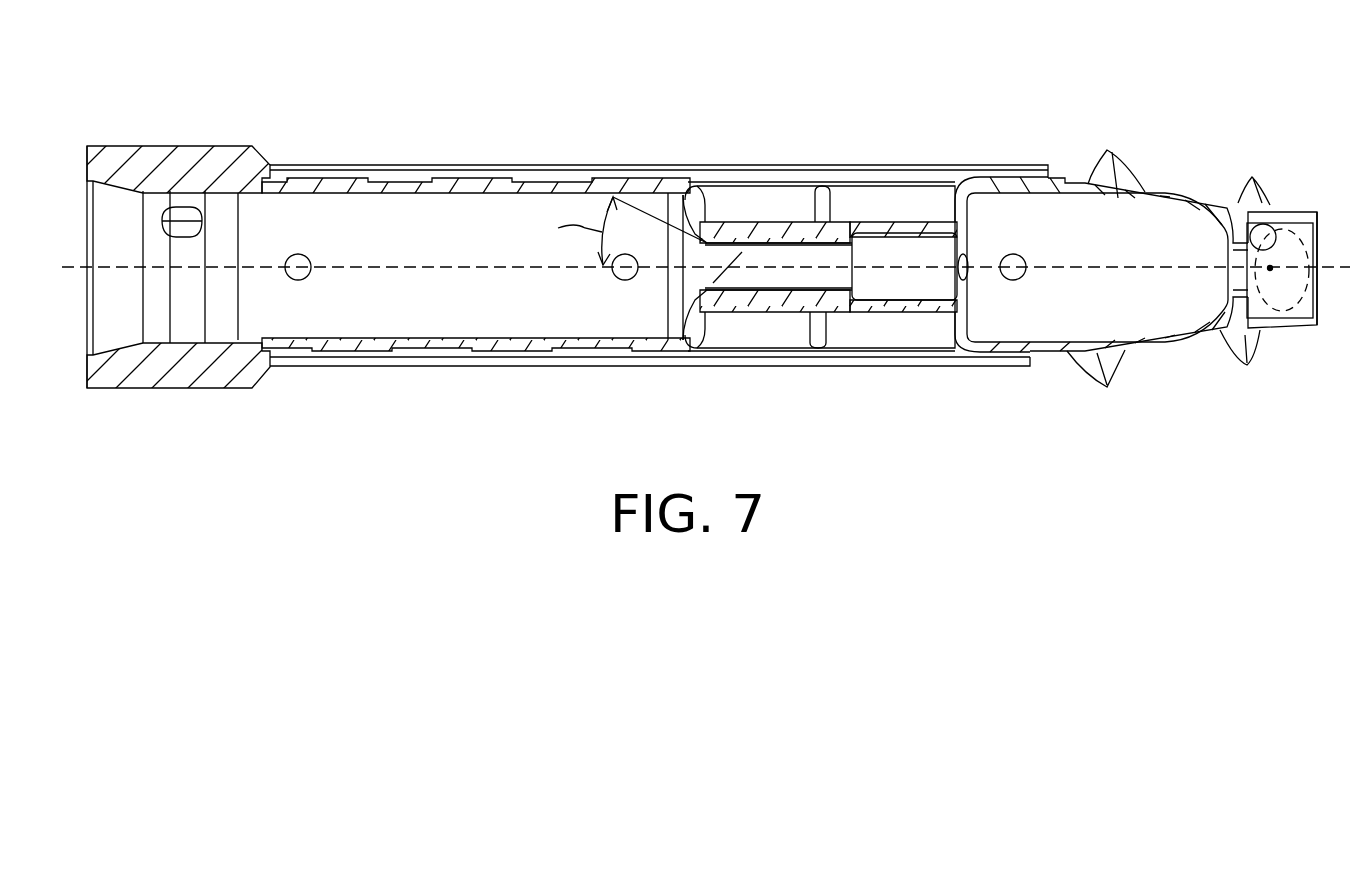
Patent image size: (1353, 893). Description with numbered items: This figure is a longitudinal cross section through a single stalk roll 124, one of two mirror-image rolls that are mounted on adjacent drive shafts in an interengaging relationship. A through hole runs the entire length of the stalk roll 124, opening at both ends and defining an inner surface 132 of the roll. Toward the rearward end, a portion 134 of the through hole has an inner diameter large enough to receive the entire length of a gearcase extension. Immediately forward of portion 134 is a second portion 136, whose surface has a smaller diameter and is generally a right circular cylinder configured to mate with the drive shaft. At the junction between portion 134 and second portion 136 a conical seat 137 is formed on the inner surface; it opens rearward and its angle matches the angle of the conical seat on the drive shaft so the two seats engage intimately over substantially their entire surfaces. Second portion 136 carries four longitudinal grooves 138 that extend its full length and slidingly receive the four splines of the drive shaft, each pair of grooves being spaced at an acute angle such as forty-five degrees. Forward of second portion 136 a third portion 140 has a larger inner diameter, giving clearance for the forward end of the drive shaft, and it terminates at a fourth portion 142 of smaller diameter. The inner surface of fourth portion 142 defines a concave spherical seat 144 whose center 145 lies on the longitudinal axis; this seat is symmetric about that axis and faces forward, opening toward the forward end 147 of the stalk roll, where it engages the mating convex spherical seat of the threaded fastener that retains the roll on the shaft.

The stalk roll 124 is at (641, 106).
The inner surface 132 is at (365, 337).
The portion of the through hole 134 is at (500, 307).
The second portion 136 is at (700, 260).
The conical seat 137 is at (673, 285).
The longitudinal grooves 138 is at (790, 250).
The third portion 140 is at (1052, 315).
The fourth portion 142 is at (1277, 293).
The concave spherical seat 144 is at (1278, 228).
The center 145 is at (1270, 268).
The forward end 147 is at (1320, 300).